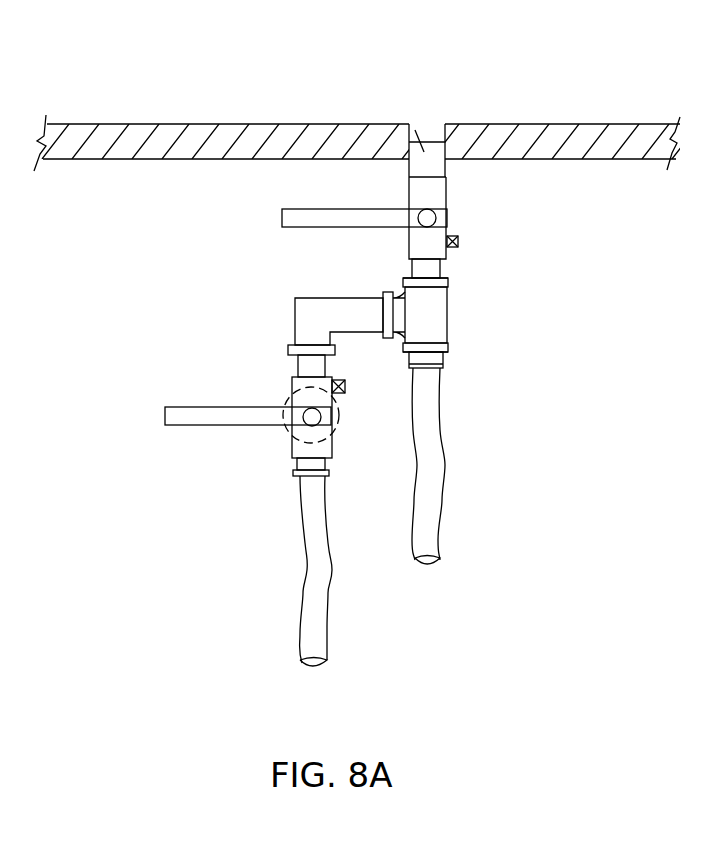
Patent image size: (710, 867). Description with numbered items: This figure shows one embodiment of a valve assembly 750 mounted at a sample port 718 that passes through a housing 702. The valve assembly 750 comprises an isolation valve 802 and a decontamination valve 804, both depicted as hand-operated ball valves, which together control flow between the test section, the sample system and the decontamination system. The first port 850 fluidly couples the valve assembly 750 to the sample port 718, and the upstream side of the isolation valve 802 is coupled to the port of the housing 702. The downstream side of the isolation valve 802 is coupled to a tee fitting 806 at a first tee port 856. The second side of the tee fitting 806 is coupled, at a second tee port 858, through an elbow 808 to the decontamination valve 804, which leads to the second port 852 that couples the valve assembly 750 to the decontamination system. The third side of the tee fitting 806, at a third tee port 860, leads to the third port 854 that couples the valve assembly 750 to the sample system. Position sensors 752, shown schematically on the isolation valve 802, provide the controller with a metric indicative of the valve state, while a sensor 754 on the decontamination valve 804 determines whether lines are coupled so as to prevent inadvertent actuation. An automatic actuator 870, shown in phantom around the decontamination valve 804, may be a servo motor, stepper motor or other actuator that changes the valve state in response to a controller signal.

The housing 702 is at (283, 122).
The sample port 718 is at (430, 135).
The first port 850 is at (415, 130).
The isolation valve 802 is at (448, 215).
The position sensor 752 is at (458, 241).
The first tee port 856 is at (450, 283).
The tee fitting 806 is at (450, 325).
The valve assembly 750 is at (472, 315).
The third tee port 860 is at (445, 345).
The second tee port 858 is at (393, 290).
The elbow fitting 808 is at (303, 298).
The decontamination valve 804 is at (293, 452).
The sensor 754 is at (346, 385).
The automatic actuator 870 is at (288, 376).
The second port 852 is at (302, 478).
The third port 854 is at (427, 373).